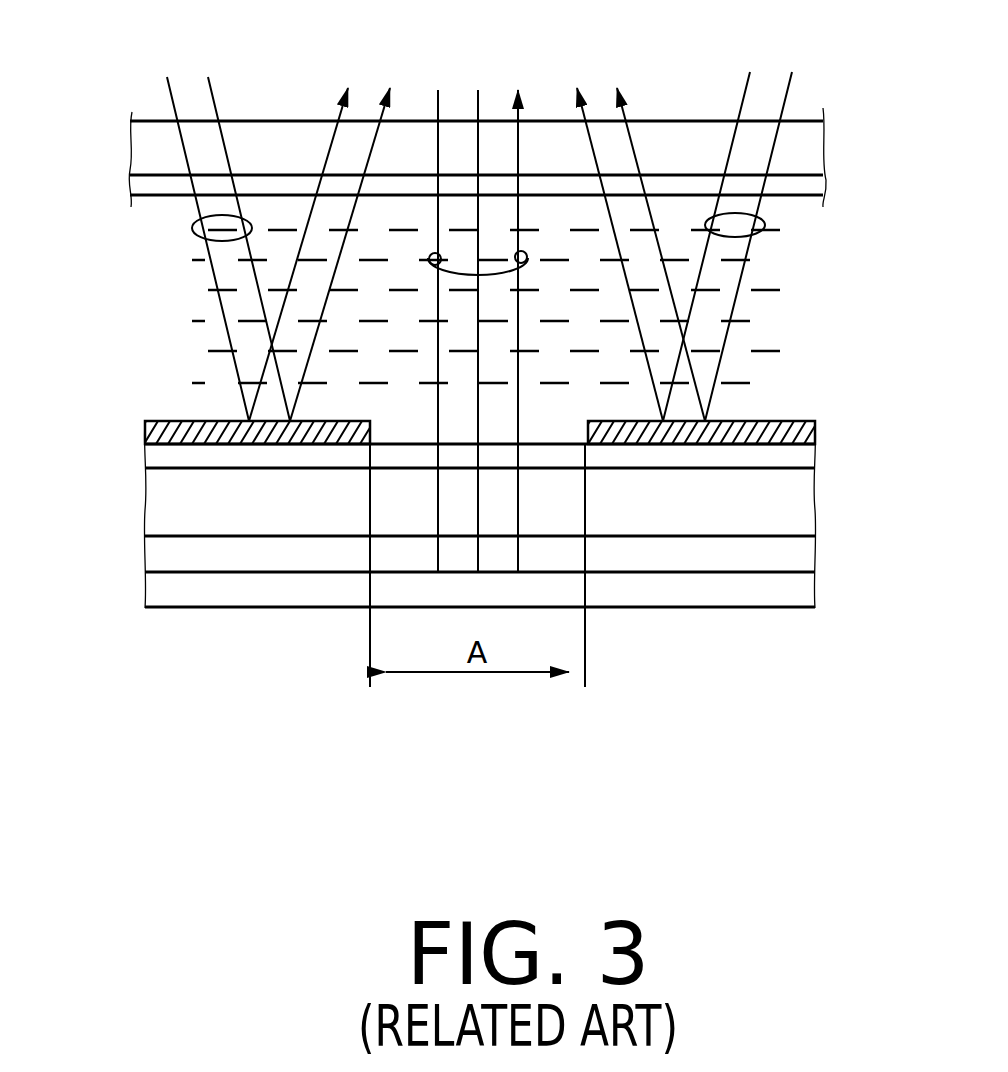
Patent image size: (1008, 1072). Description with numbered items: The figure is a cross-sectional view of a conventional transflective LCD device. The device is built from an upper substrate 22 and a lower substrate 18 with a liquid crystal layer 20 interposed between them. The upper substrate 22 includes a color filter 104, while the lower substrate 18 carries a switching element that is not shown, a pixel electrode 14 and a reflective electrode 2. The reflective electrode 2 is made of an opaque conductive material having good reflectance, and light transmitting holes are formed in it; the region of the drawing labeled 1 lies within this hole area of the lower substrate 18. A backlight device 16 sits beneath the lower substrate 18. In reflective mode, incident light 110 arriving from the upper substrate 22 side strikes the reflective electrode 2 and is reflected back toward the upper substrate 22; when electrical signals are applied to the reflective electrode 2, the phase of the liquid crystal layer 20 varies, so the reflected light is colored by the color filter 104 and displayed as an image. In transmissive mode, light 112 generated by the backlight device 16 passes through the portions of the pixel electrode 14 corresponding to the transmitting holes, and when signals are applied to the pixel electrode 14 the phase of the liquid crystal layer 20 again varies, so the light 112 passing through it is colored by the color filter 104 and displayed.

The transmissive region 1 is at (477, 565).
The reflective electrode 2 is at (143, 432).
The pixel electrode 14 is at (447, 457).
The backlight device 16 is at (688, 587).
The lower substrate 18 is at (849, 408).
The liquid crystal layer 20 is at (849, 217).
The upper substrate 22 is at (849, 105).
The color filter 104 is at (557, 183).
The incident light 110 is at (193, 228).
The light from the backlight device 112 is at (527, 262).